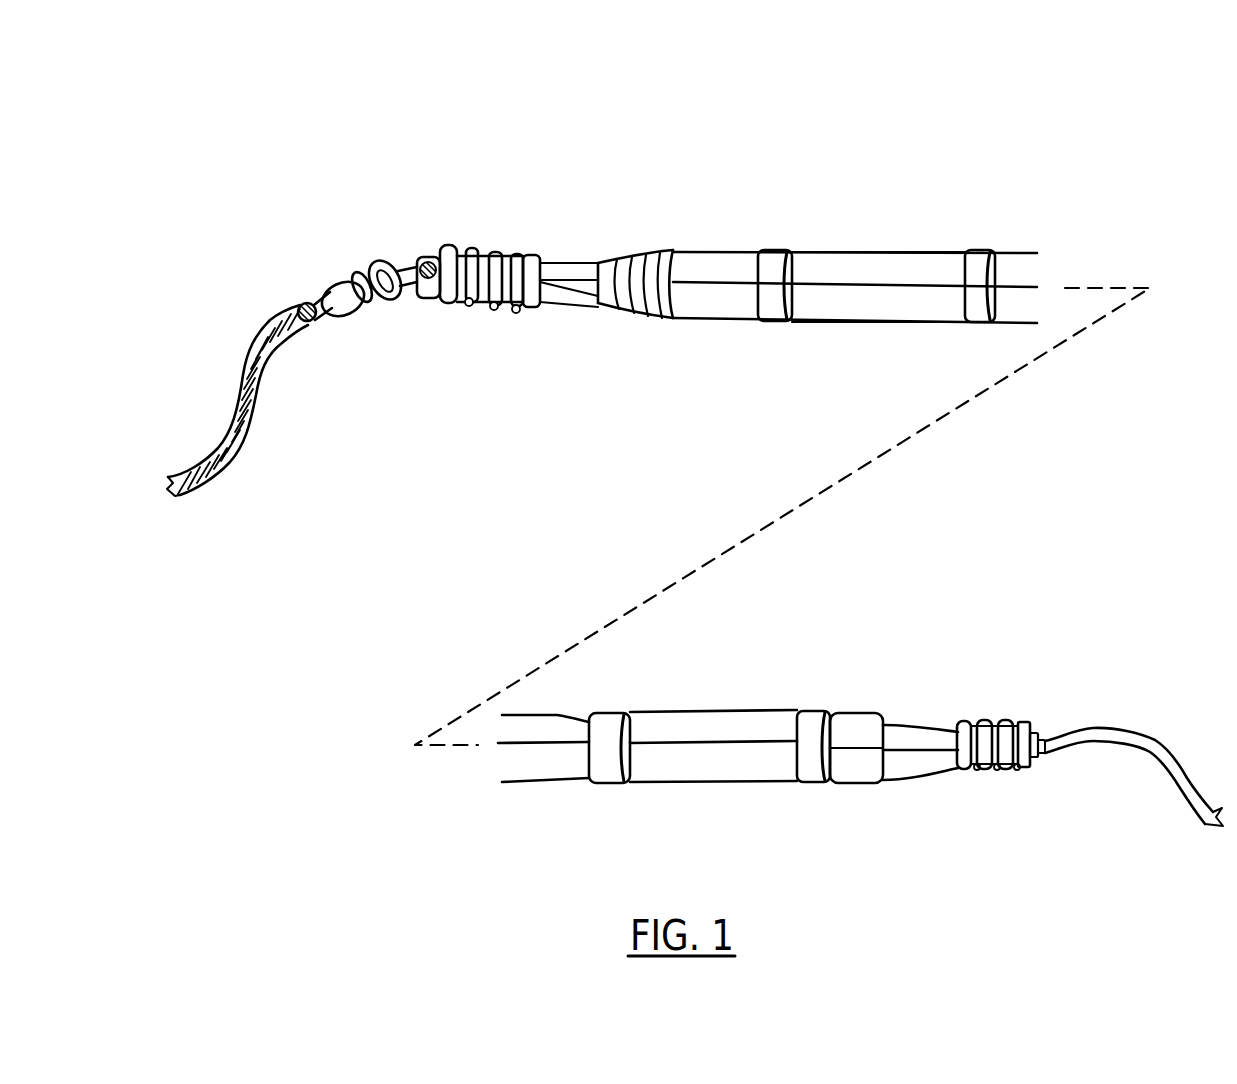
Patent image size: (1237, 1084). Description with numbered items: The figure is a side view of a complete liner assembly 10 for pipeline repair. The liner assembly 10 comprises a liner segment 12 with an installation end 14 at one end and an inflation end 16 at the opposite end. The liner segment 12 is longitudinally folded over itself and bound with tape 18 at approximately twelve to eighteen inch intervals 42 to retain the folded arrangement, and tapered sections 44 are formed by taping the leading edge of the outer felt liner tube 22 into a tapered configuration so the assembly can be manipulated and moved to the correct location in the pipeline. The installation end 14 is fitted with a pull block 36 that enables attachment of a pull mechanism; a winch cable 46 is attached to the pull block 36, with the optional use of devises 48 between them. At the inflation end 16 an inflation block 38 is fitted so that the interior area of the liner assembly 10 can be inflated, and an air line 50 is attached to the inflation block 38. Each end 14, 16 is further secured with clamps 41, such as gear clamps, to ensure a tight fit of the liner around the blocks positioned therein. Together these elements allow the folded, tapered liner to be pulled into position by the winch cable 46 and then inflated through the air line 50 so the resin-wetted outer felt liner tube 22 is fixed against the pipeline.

The liner assembly 10 is at (658, 146).
The liner segment 12 is at (727, 210).
The installation end 14 is at (457, 198).
The inflation end 16 is at (976, 673).
The tape 18 is at (777, 258).
The outer felt liner tube 22 is at (893, 270).
The pull block 36 is at (438, 298).
The inflation block 38 is at (1037, 760).
The clamps 41 is at (516, 256).
The intervals 42 is at (769, 308).
The tapered sections 44 is at (627, 302).
The winch cable 46 is at (255, 417).
The devises 48 is at (369, 273).
The air line 50 is at (1148, 736).